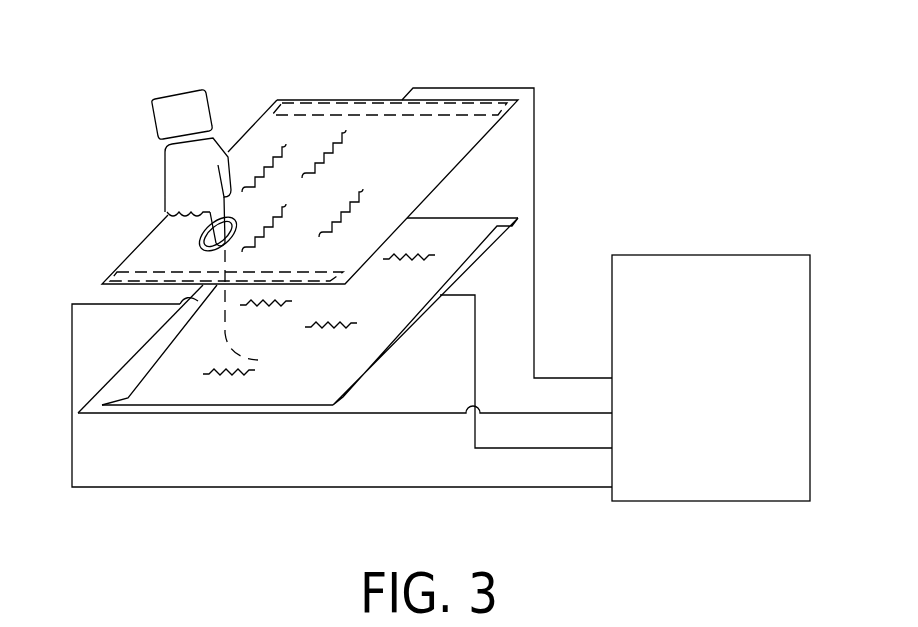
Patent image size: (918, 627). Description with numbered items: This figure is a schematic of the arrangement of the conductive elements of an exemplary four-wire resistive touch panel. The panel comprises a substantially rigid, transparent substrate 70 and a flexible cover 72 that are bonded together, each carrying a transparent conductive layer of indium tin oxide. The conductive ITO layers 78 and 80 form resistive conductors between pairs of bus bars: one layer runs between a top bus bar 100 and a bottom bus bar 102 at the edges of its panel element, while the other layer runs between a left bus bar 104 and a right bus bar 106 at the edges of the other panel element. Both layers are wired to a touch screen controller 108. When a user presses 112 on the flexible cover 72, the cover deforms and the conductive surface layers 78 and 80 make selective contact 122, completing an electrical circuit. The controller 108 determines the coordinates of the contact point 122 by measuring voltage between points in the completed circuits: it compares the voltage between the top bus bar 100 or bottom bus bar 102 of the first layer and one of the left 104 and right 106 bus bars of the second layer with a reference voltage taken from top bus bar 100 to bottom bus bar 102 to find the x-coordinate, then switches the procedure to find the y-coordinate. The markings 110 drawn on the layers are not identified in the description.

The substrate 70 is at (128, 420).
The flexible cover 72 is at (124, 236).
The conductive ITO layer 78 is at (455, 167).
The conductive ITO layer 80 is at (465, 235).
The top bus bar 100 is at (360, 107).
The bottom bus bar 102 is at (110, 273).
The left bus bar 104 is at (160, 353).
The right bus bar 106 is at (378, 358).
The touch screen controller 108 is at (647, 255).
The signals 110 is at (274, 152).
The press 112 is at (147, 121).
The contact point 122 is at (264, 311).